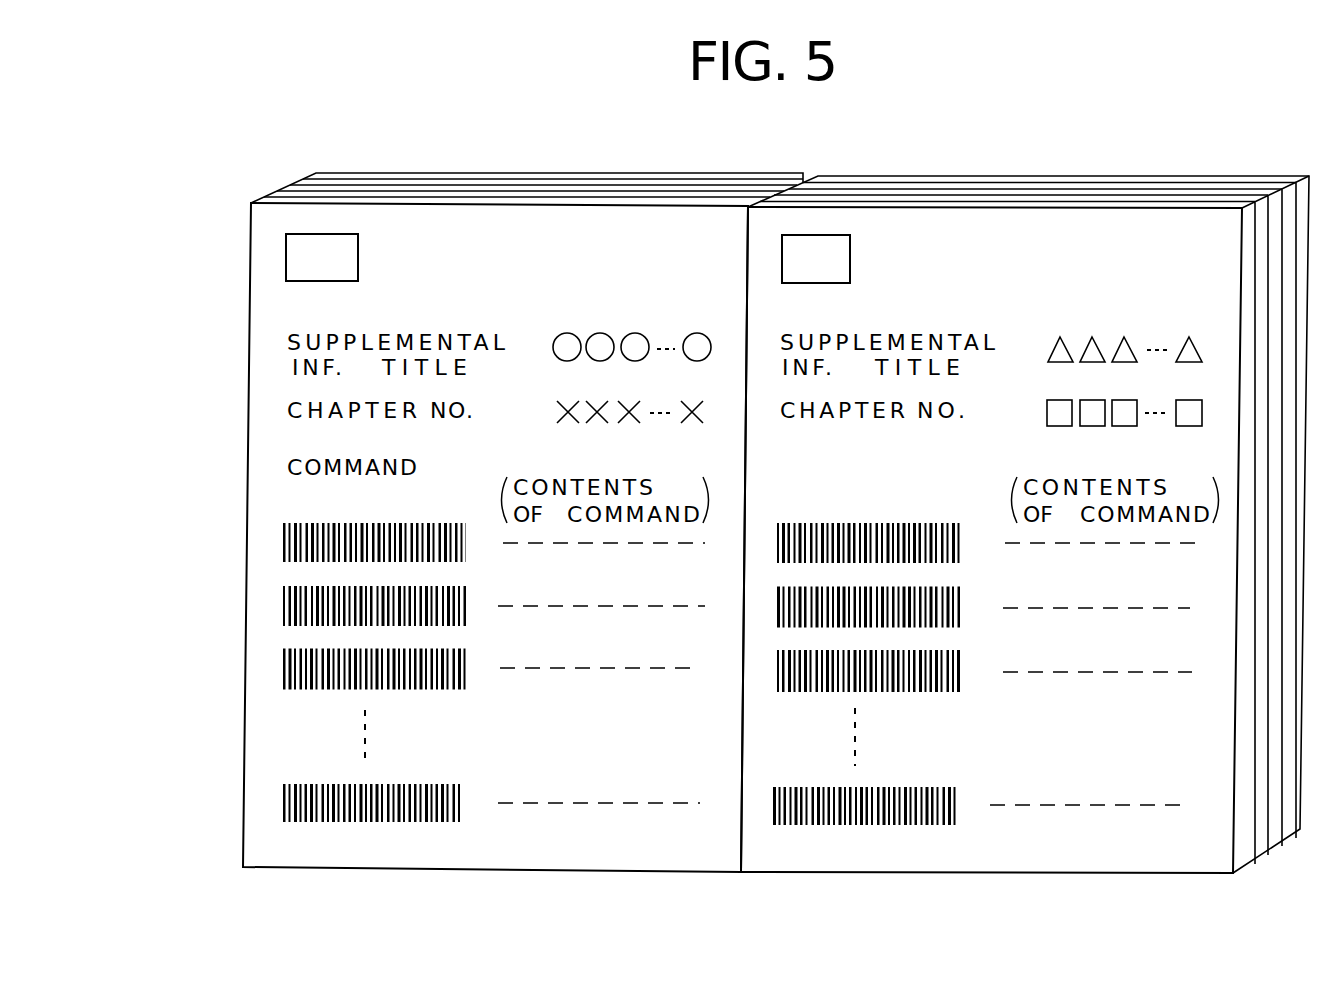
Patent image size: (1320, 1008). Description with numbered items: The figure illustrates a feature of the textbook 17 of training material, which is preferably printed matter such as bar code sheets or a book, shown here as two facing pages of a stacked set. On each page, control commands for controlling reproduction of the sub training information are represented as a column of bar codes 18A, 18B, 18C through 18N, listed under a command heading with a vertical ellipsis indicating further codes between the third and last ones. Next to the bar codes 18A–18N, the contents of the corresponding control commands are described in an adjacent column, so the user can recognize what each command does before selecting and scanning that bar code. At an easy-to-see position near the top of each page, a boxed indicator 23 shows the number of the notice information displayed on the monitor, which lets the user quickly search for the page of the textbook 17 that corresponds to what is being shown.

The textbook 17 is at (1005, 175).
The indicator 23 is at (302, 234).
The bar code 18A is at (273, 540).
The bar code 18B is at (278, 608).
The bar code 18C is at (273, 664).
The bar code 18N is at (277, 797).